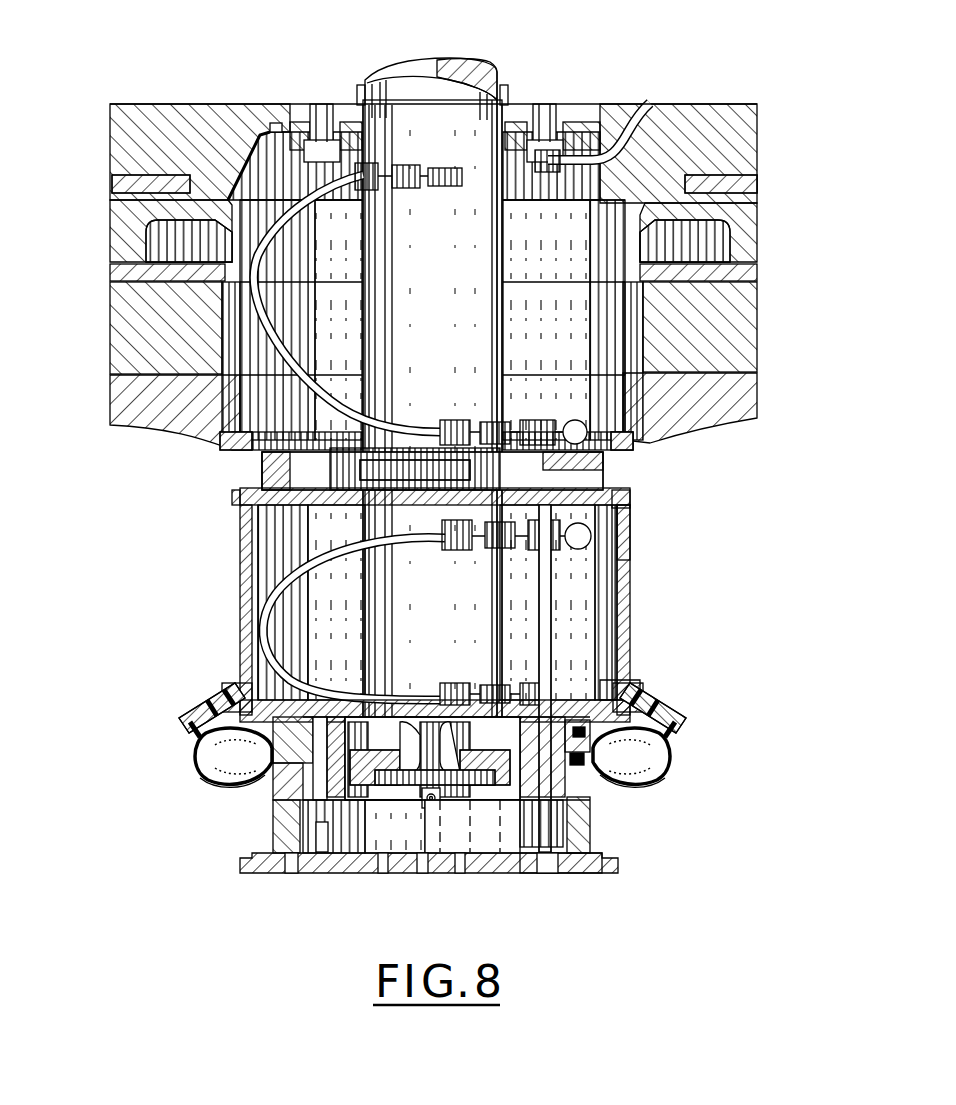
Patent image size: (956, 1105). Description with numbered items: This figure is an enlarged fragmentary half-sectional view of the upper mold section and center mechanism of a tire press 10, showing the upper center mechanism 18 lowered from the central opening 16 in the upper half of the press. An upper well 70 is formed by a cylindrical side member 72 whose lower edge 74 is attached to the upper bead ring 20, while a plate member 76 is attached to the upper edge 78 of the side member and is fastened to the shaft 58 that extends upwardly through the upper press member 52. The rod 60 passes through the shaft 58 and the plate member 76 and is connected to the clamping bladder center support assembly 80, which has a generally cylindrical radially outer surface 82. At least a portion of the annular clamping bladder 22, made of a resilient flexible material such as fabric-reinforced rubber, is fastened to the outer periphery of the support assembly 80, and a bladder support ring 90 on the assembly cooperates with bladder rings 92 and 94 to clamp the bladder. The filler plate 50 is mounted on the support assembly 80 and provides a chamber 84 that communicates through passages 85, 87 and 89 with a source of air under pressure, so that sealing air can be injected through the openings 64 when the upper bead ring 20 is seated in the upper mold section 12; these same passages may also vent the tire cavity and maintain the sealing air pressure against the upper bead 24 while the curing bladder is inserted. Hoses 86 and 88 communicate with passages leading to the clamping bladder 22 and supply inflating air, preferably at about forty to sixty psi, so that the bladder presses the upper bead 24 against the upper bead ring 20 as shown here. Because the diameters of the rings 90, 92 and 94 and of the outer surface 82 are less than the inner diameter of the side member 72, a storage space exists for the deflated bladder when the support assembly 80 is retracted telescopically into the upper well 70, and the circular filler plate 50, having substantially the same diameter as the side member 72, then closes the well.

The tire press 10 is at (740, 52).
The upper mold section 12 is at (755, 382).
The central opening 16 is at (608, 240).
The upper center mechanism 18 is at (476, 583).
The upper bead ring 20 is at (645, 690).
The annular clamping bladder 22 is at (670, 772).
The upper bead 24 is at (655, 712).
The filler plate 50 is at (438, 866).
The upper press member 52 is at (758, 118).
The shaft 58 is at (505, 105).
The rod 60 is at (382, 68).
The openings 64 is at (468, 868).
The upper well 70 is at (627, 528).
The cylindrical side member 72 is at (627, 604).
The lower edge 74 is at (628, 686).
The plate member 76 is at (606, 490).
The upper edge 78 is at (625, 500).
The clamping bladder center support assembly 80 is at (452, 789).
The radially outer surface 82 is at (590, 838).
The chamber 84 is at (562, 870).
The passage 85 is at (280, 783).
The hose 86 is at (262, 630).
The passage 87 is at (278, 470).
The hose 88 is at (262, 305).
The passage 89 is at (640, 103).
The bladder support ring 90 is at (595, 775).
The bladder ring 92 is at (678, 752).
The bladder ring 94 is at (583, 697).